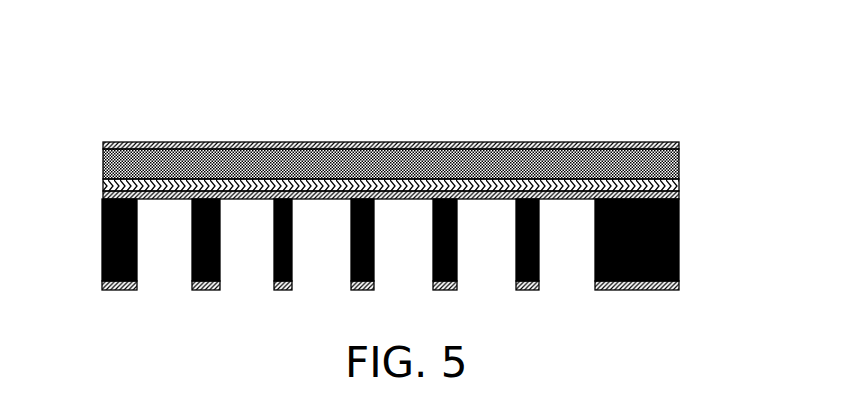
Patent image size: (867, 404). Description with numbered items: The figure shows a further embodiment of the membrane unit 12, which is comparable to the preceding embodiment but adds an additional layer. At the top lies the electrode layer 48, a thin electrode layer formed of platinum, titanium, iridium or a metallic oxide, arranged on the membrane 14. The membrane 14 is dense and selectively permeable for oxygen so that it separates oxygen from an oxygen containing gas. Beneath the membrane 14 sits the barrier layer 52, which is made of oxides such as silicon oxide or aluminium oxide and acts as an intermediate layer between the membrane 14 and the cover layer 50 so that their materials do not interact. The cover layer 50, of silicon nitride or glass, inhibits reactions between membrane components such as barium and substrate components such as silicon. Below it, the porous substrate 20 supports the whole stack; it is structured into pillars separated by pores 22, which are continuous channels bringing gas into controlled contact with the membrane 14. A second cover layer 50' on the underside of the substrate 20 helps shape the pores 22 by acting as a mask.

The membrane unit 12 is at (96, 114).
The electrode layer 48 is at (679, 143).
The membrane 14 is at (679, 168).
The barrier layer 52 is at (679, 183).
The cover layer 50 is at (433, 199).
The porous substrate 20 is at (679, 237).
The cover layer 50' is at (435, 292).
The pores 22 is at (568, 275).